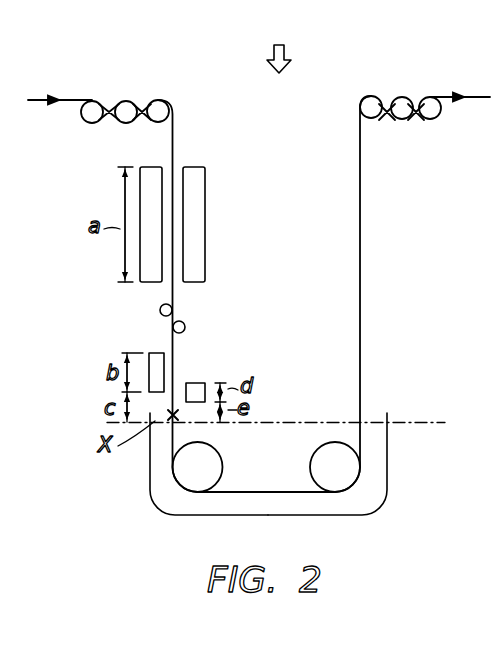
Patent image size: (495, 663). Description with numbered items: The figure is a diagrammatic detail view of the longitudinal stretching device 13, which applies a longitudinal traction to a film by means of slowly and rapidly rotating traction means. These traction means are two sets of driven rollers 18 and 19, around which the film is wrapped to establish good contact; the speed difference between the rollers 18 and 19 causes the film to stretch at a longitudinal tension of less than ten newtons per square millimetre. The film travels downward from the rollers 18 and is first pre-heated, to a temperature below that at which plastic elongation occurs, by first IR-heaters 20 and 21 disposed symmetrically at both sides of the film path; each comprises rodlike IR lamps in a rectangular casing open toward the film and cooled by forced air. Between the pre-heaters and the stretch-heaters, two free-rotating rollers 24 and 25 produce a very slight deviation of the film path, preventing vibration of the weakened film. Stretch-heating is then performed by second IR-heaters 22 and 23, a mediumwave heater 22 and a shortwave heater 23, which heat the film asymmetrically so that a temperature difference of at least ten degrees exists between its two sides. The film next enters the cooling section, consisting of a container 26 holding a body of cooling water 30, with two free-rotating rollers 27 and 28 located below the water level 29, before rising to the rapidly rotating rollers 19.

The longitudinal stretching device 13 is at (290, 58).
The set of driven rollers 18 is at (131, 91).
The set of driven rollers 19 is at (419, 91).
The first IR-heater 20 is at (148, 195).
The first IR-heater 21 is at (202, 194).
The second IR-heater 22 is at (151, 354).
The second IR-heater 23 is at (195, 384).
The free-rotating roller 24 is at (160, 309).
The free-rotating roller 25 is at (186, 327).
The container 26 is at (150, 480).
The free-rotating roller 27 is at (188, 481).
The free-rotating roller 28 is at (353, 482).
The level of cooling water 29 is at (379, 415).
The cooling water 30 is at (375, 470).